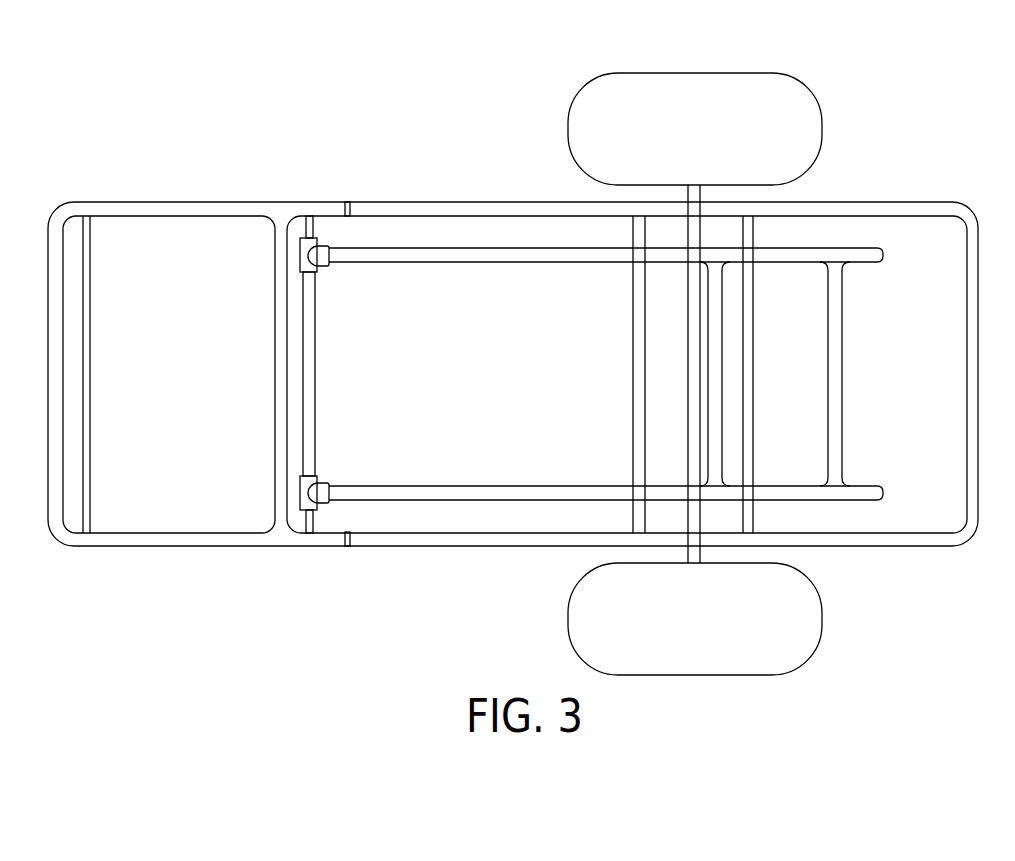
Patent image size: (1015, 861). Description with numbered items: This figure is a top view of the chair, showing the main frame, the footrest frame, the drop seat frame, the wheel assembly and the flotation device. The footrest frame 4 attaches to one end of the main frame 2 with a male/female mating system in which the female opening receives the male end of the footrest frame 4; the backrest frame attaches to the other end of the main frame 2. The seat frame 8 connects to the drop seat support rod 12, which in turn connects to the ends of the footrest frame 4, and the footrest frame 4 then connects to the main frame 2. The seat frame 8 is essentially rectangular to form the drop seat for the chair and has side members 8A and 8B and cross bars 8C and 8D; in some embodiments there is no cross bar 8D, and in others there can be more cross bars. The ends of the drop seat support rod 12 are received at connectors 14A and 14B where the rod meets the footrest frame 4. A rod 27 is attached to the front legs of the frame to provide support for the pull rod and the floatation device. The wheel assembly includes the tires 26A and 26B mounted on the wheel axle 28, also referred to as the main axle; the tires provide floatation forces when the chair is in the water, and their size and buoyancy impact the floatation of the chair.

The main frame 2 is at (950, 545).
The footrest frame 4 is at (150, 540).
The rod 27 is at (90, 313).
The wheel axle 28 is at (690, 235).
The tire 26A is at (745, 668).
The tire 26B is at (718, 80).
The seat frame 8 is at (598, 412).
The side member 8A is at (446, 487).
The side member 8B is at (487, 260).
The cross bar 8C is at (843, 318).
The cross bar 8D is at (717, 337).
The drop seat support rod 12 is at (313, 330).
The pivot connector 14A is at (316, 478).
The pivot connector 14B is at (322, 266).